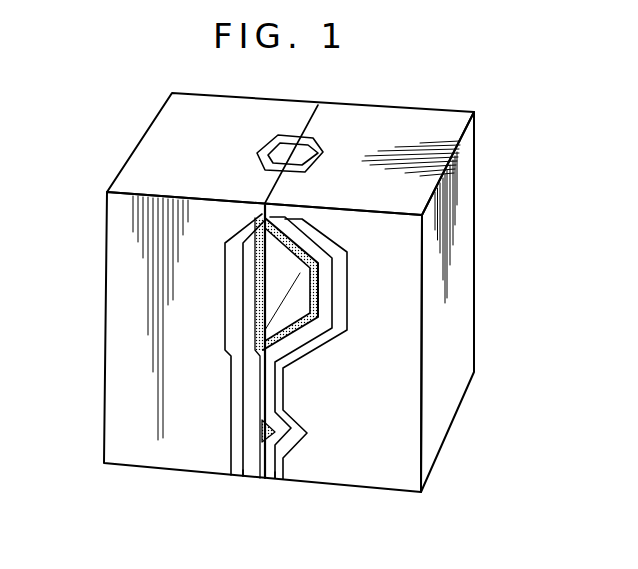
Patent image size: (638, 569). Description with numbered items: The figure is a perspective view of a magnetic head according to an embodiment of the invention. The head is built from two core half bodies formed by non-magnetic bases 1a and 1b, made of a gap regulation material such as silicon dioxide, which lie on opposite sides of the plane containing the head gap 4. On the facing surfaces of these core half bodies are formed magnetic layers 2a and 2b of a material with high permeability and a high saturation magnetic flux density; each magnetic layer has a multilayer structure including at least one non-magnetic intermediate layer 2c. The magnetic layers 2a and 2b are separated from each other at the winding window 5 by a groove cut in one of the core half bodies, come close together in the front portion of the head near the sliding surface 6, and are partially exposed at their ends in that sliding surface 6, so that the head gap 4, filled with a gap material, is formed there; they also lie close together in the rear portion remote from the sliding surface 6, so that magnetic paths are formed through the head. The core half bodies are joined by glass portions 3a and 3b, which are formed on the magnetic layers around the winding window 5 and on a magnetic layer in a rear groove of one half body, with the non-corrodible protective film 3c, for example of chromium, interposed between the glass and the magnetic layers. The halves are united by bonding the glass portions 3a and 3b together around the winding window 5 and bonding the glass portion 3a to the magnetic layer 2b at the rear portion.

The non-magnetic base 1a is at (462, 284).
The non-magnetic base 1b is at (118, 311).
The magnetic layer 2a is at (330, 325).
The magnetic layer 2b is at (261, 158).
The non-magnetic intermediate layer 2c is at (314, 162).
The glass portion 3a is at (303, 332).
The glass portion 3b is at (256, 284).
The protective film 3c is at (318, 262).
The head gap 4 is at (297, 152).
The winding window 5 is at (262, 304).
The sliding surface 6 is at (418, 132).